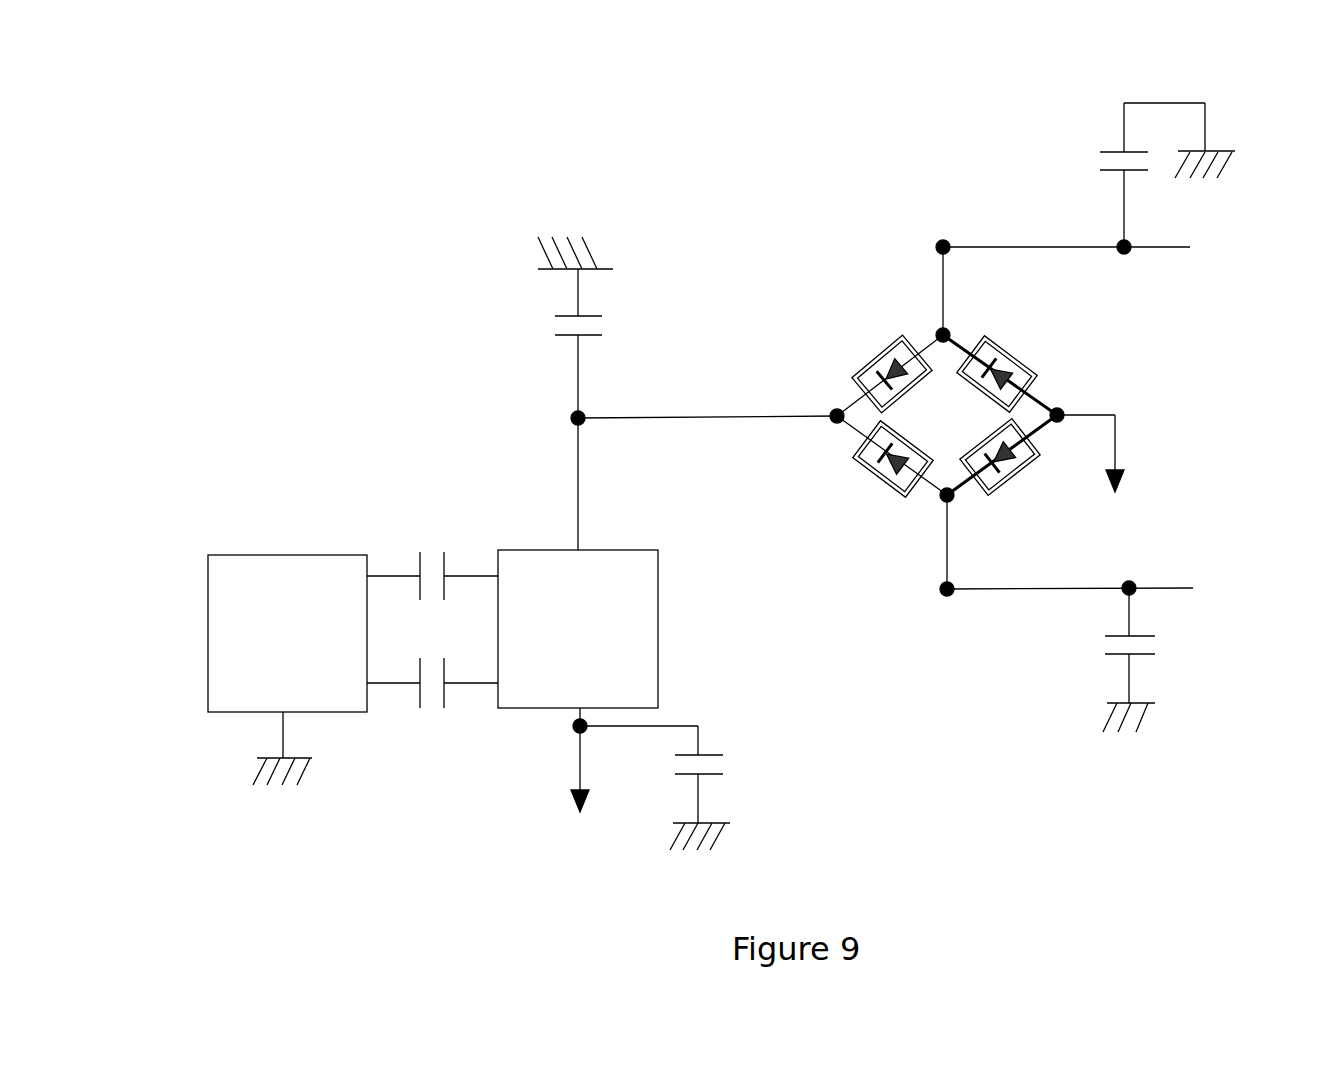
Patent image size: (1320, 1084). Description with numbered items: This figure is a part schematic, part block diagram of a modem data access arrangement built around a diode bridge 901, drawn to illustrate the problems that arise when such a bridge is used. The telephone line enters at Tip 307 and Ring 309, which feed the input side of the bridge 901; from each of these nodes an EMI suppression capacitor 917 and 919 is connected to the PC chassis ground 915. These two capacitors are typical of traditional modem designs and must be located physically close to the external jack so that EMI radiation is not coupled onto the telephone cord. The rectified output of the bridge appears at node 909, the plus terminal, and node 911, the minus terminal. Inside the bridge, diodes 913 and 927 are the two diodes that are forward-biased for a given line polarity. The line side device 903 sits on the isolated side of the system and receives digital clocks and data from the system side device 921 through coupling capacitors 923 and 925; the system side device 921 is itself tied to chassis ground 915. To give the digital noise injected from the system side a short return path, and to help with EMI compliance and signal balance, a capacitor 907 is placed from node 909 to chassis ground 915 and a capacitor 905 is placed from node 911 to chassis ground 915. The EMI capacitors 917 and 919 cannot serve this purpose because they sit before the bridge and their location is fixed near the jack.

The diode bridge 901 is at (1001, 400).
The line side device 903 is at (578, 629).
The capacitor 905 is at (723, 766).
The capacitor 907 is at (597, 323).
The node (+ terminal) 909 is at (835, 403).
The node (− terminal) 911 is at (1002, 237).
The diode 913 is at (895, 320).
The chassis ground 915 is at (308, 778).
The capacitor 917 is at (1088, 157).
The capacitor 919 is at (1158, 647).
The system side device 921 is at (287, 633).
The capacitor 923 is at (432, 547).
The capacitor 925 is at (433, 712).
The diode 927 is at (1017, 483).
The Tip 307 is at (1154, 236).
The Ring 309 is at (1158, 577).